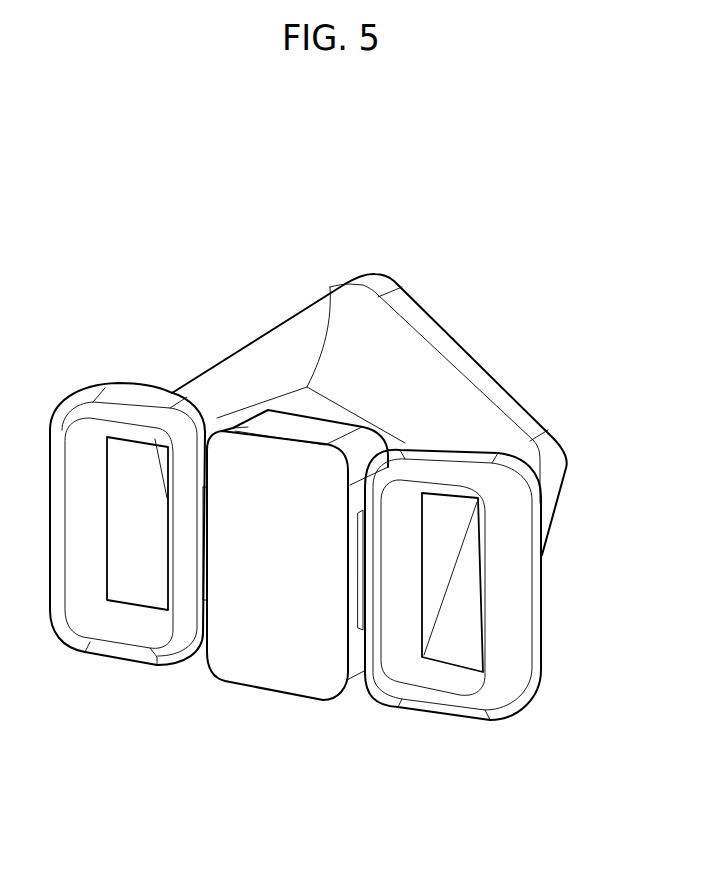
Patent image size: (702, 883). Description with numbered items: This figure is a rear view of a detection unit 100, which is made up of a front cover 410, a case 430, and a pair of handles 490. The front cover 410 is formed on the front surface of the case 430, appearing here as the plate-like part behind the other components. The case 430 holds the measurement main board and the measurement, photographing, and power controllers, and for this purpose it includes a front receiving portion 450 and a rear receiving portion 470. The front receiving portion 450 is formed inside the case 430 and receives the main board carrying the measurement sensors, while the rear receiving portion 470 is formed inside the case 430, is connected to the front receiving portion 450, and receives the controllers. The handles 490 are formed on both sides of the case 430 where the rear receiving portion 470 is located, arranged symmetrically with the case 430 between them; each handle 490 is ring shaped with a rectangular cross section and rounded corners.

The detection unit 100 is at (167, 197).
The front cover 410 is at (452, 347).
The case 430 is at (256, 286).
The front receiving portion 450 is at (265, 353).
The rear receiving portion 470 is at (249, 424).
The handle 490 is at (437, 690).